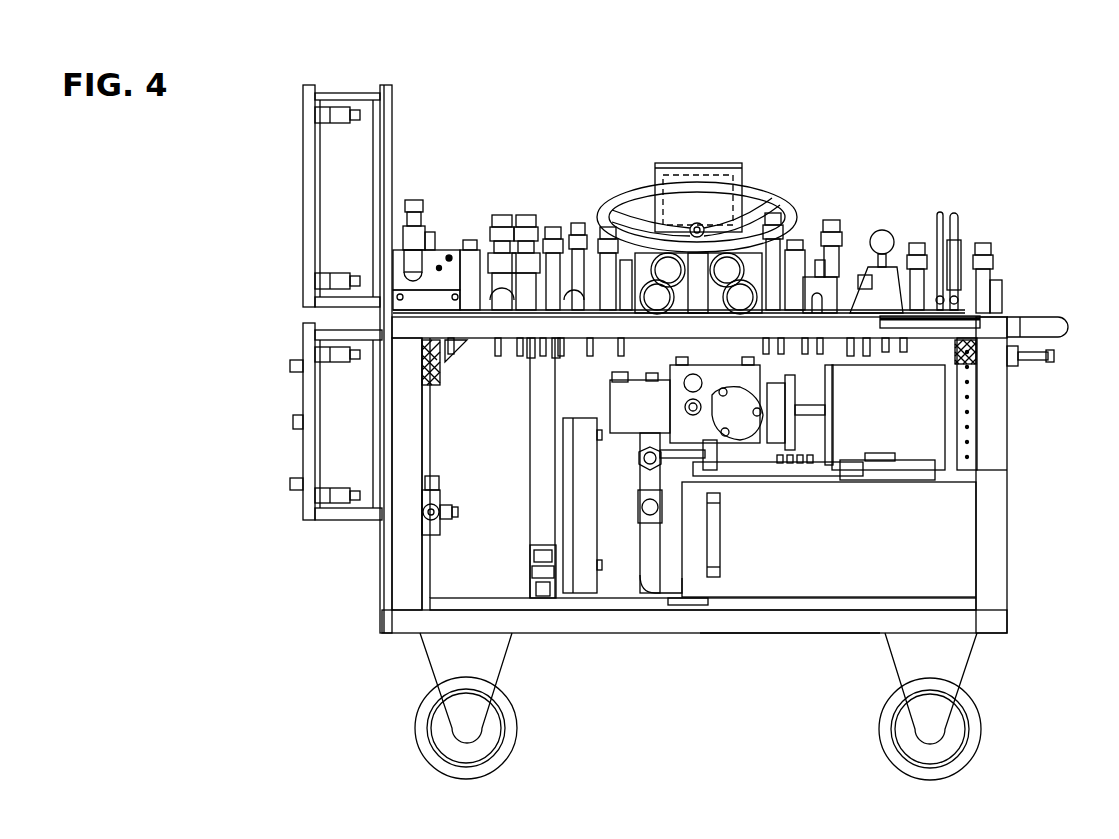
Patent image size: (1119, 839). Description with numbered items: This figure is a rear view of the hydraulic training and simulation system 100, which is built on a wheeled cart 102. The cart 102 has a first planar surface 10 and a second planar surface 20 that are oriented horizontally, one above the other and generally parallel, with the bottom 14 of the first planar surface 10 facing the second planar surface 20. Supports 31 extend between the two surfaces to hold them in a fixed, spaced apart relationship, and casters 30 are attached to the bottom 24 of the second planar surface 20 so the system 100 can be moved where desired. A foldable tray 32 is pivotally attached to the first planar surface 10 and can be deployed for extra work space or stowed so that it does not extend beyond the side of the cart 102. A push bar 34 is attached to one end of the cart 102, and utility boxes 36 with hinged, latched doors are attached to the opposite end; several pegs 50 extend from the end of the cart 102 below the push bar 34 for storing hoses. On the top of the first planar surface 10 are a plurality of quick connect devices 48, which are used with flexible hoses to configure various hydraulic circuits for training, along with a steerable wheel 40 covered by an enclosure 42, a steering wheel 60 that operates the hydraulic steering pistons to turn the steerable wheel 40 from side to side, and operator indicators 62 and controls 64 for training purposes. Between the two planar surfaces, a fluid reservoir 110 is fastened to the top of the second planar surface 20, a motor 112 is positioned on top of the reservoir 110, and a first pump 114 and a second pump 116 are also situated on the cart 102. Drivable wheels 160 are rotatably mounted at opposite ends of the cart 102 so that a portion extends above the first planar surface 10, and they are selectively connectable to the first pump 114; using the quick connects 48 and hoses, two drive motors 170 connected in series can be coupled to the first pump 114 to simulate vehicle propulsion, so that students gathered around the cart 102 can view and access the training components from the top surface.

The hydraulic training and simulation system 100 is at (972, 110).
The first planar surface 10 is at (440, 330).
The bottom of the first planar surface 14 is at (518, 353).
The second planar surface 20 is at (647, 618).
The bottom of the second planar surface 24 is at (793, 635).
The casters 30 is at (415, 733).
The supports 31 is at (408, 523).
The foldable tray 32 is at (980, 323).
The push bar 34 is at (1065, 318).
The utility boxes 36 is at (334, 163).
The steerable wheel 40 is at (692, 175).
The enclosure 42 is at (657, 163).
The quick connect devices 48 is at (513, 213).
The pegs 50 is at (1047, 357).
The steering wheel 60 is at (773, 195).
The operator indicators 62 is at (665, 268).
The controls 64 is at (882, 230).
The cart 102 is at (993, 468).
The fluid reservoir 110 is at (838, 567).
The motor 112 is at (917, 424).
The first pump 114 is at (730, 378).
The second pump 116 is at (628, 412).
The drivable wheel 160 is at (430, 387).
The drive motors 170 is at (480, 345).